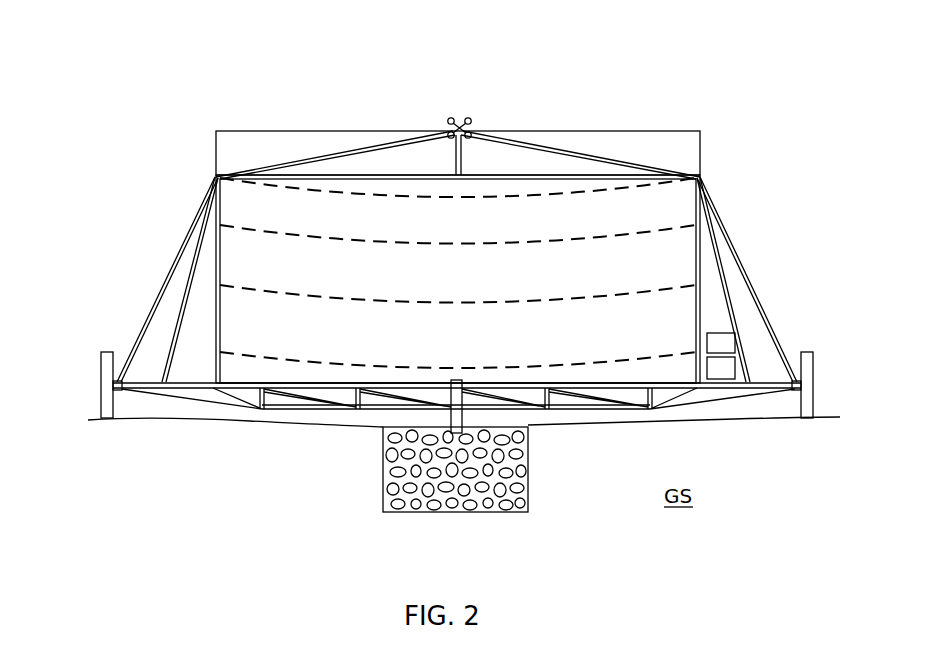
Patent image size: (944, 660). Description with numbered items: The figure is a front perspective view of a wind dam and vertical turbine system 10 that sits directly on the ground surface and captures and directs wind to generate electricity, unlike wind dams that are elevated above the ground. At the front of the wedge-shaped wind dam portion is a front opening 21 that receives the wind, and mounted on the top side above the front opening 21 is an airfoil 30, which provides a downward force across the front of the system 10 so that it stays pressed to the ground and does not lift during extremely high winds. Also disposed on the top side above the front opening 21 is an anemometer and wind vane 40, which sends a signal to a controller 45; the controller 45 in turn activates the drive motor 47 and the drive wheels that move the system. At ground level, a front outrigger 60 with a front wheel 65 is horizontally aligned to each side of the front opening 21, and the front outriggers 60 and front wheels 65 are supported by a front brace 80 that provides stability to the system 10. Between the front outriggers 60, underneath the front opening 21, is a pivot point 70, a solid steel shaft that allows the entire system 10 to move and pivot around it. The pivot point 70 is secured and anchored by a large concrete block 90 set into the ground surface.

The wind dam and vertical turbine system 10 is at (653, 88).
The airfoil 30 is at (655, 130).
The front opening 21 is at (442, 284).
The anemometer and wind vane 40 is at (471, 120).
The controller 45 is at (718, 343).
The drive motor 47 is at (722, 367).
The front outrigger 60 is at (190, 388).
The front wheel 65 is at (100, 372).
The pivot point 70 is at (463, 413).
The front brace 80 is at (320, 410).
The concrete block 90 is at (530, 470).